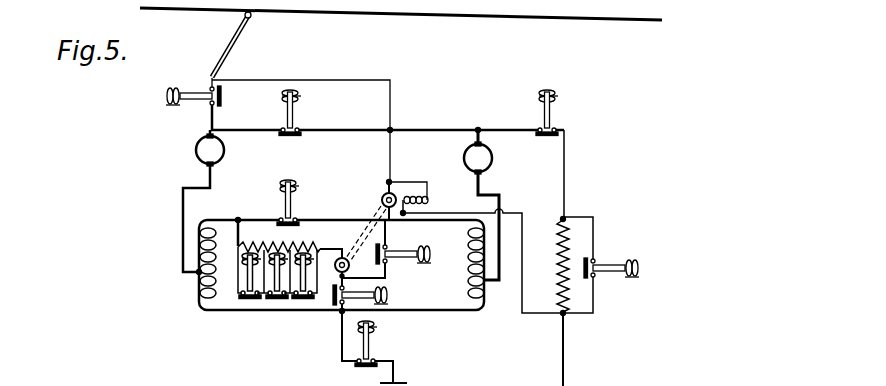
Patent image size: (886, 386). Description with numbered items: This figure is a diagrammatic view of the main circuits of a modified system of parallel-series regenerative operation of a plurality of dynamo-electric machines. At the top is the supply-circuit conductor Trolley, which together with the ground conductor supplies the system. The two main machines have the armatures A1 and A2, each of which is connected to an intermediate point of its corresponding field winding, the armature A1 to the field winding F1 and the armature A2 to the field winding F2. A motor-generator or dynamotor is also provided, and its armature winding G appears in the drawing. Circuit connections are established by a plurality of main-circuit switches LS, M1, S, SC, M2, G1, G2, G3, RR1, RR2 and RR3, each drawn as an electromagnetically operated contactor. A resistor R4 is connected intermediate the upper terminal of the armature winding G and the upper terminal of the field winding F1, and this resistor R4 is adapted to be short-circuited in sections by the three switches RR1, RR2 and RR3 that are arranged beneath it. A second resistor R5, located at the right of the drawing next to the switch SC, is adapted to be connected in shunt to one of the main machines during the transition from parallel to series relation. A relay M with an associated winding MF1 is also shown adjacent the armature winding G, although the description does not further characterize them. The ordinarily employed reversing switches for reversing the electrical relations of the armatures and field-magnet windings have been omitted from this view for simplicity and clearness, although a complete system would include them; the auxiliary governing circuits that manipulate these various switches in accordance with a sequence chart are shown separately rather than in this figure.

The supply-circuit conductor Trolley is at (401, 42).
The main-circuit switch LS is at (199, 103).
The main-circuit switch M1 is at (299, 113).
The armature A1 is at (190, 150).
The armature A2 is at (490, 158).
The main-circuit switch S is at (551, 113).
The main-circuit switch M2 is at (298, 203).
The master relay M is at (371, 225).
The relay coil MF1 is at (430, 205).
The resistor R4 is at (279, 239).
The field winding F1 is at (217, 263).
The field winding F2 is at (463, 263).
The main-circuit switch RR1 is at (245, 288).
The main-circuit switch RR2 is at (273, 289).
The main-circuit switch RR3 is at (303, 289).
The armature winding G is at (349, 267).
The main-circuit switch G1 is at (403, 250).
The main-circuit switch G2 is at (369, 298).
The main-circuit switch G3 is at (352, 353).
The resistor R5 is at (549, 266).
The main-circuit switch SC is at (611, 276).